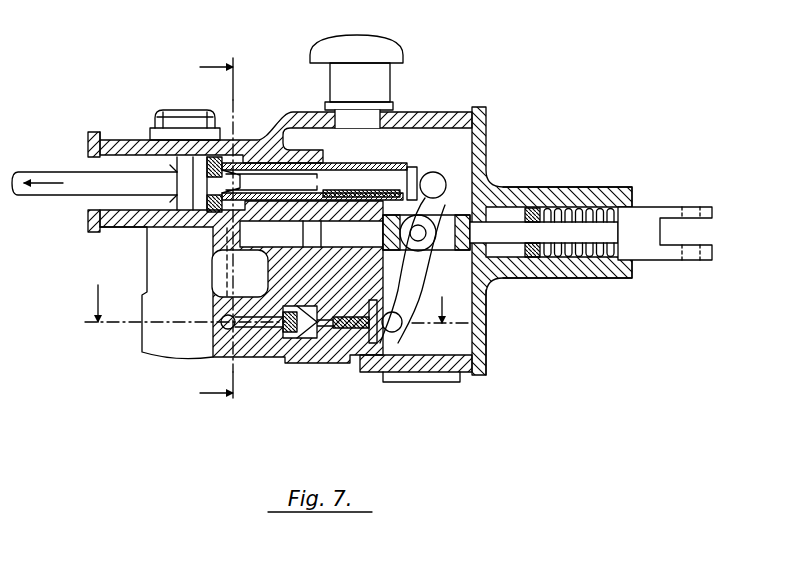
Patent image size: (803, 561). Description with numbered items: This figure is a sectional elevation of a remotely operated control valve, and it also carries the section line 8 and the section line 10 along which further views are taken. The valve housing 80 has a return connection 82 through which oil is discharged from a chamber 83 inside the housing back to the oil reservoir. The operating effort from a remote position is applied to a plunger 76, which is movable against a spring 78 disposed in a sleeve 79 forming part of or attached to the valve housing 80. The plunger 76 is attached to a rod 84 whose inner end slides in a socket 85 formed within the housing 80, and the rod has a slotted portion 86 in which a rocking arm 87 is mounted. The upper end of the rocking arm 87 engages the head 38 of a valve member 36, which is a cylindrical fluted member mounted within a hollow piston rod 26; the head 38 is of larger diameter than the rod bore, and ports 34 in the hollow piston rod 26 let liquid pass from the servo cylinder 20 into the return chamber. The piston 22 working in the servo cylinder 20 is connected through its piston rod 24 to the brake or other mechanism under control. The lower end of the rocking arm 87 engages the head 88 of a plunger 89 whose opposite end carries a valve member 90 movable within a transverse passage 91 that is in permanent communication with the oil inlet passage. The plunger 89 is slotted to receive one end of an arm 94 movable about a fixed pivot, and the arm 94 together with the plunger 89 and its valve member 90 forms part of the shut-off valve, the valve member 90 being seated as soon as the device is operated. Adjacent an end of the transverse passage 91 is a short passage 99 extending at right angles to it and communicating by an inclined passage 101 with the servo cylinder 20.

The section line 8— 8 is at (216, 230).
The section line 10— 10 is at (265, 304).
The servo cylinder 20 is at (98, 204).
The piston 22 is at (147, 220).
The piston rod 24 is at (70, 177).
The hollow piston rod 26 is at (352, 157).
The ports 34 is at (245, 162).
The valve member 36 is at (383, 177).
The head 38 is at (415, 162).
The plunger 76 is at (648, 255).
The spring 78 is at (563, 210).
The sleeve 79 is at (578, 268).
The valve housing 80 is at (478, 130).
The return connection 82 is at (430, 377).
The chamber 83 is at (465, 292).
The rod 84 is at (507, 230).
The socket 85 is at (143, 353).
The slotted portion 86 is at (478, 197).
The rocking arm 87 is at (412, 293).
The head 88 is at (375, 345).
The plunger 89 is at (332, 312).
The valve member 90 is at (283, 350).
The transverse passage 91 is at (287, 293).
The arm 94 is at (320, 360).
The short passage 99 is at (202, 358).
The inclined passage 101 is at (240, 265).